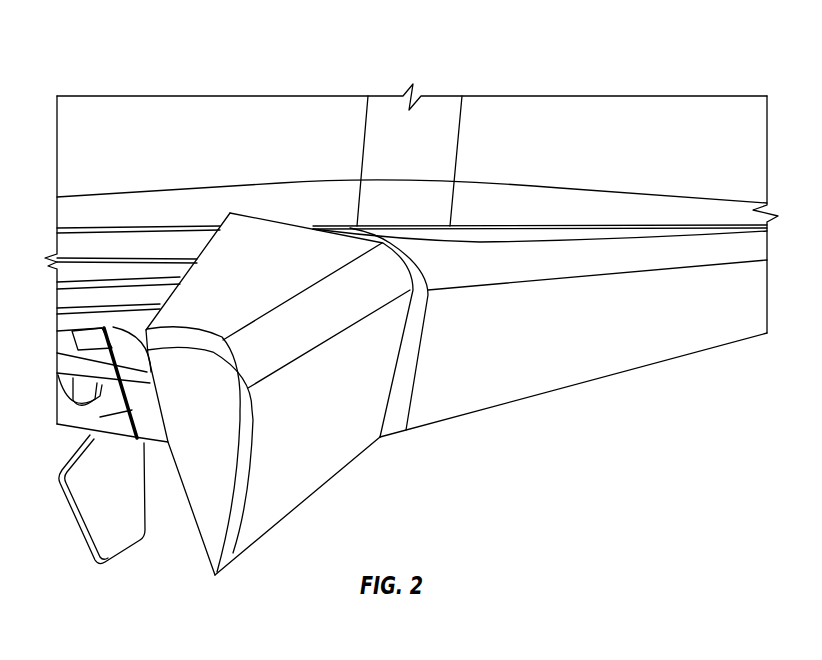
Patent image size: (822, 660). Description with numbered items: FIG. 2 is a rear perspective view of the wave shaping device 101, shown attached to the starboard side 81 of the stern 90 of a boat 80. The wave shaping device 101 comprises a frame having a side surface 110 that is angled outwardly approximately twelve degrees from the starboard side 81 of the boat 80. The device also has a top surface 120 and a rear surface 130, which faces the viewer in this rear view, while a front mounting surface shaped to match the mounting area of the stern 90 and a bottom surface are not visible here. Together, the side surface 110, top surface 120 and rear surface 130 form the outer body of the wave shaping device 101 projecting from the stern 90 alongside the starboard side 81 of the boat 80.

The boat 80 is at (632, 108).
The starboard side 81 is at (603, 252).
The stern 90 is at (90, 143).
The wave shaping device 101 is at (342, 393).
The side surface 110 is at (350, 427).
The top surface 120 is at (268, 252).
The rear surface 130 is at (207, 437).